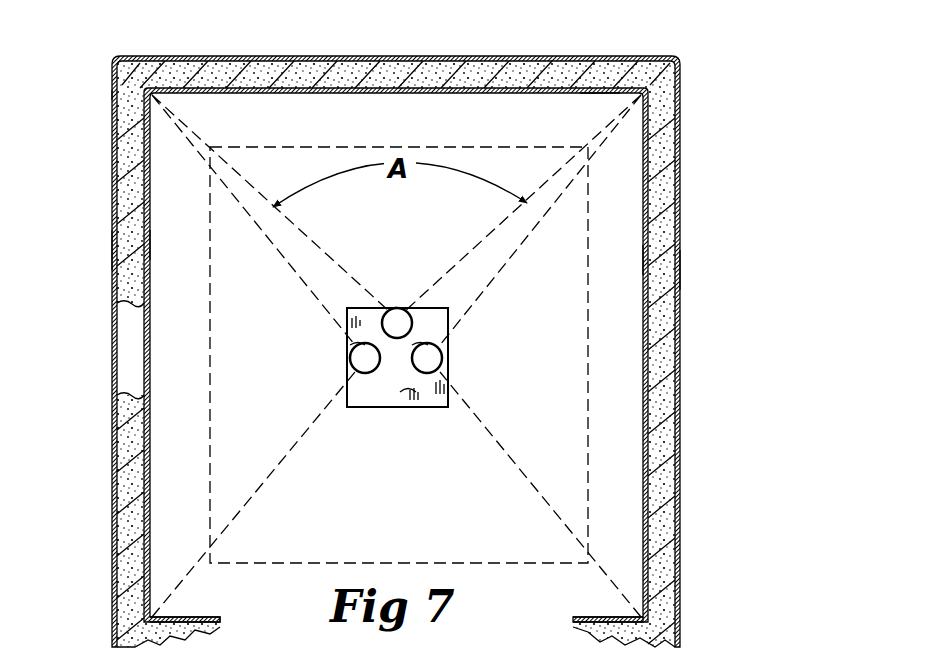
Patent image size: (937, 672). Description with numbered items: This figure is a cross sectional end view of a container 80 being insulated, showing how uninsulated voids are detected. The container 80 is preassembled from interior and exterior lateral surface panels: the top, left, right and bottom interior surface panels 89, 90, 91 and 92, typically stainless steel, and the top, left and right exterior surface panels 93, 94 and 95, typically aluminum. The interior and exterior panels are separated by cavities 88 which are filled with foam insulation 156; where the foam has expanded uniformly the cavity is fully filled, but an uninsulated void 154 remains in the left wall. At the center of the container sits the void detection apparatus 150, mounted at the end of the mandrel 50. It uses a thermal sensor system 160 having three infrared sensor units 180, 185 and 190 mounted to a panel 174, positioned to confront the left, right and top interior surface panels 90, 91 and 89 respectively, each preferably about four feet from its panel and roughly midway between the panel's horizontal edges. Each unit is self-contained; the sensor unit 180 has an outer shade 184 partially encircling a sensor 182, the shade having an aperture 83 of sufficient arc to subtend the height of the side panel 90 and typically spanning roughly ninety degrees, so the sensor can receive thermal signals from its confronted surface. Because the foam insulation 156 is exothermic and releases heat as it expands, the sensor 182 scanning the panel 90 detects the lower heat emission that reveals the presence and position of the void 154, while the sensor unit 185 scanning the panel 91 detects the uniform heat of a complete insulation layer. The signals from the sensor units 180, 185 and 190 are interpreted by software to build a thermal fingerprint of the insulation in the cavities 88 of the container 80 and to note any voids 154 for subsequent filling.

The mandrel 50 is at (297, 568).
The container 80 is at (100, 92).
The aperture 83 is at (600, 90).
The cavities 88 is at (552, 72).
The top interior surface panel 89 is at (265, 93).
The left interior surface panel 90 is at (150, 242).
The right interior surface panel 91 is at (646, 258).
The bottom interior surface panel 92 is at (185, 617).
The top exterior surface panel 93 is at (346, 60).
The left exterior surface panel 94 is at (112, 250).
The right exterior surface panel 95 is at (681, 268).
The void detection apparatus 150 is at (340, 300).
The void 154 is at (130, 350).
The foam insulation 156 is at (398, 70).
The thermal sensor system 160 is at (385, 410).
The panel 174 is at (408, 396).
The infrared sensor unit 180 is at (343, 332).
The sensor 182 is at (398, 306).
The outer shade 184 is at (415, 322).
The infrared sensor unit 185 is at (455, 346).
The infrared sensor unit 190 is at (388, 306).